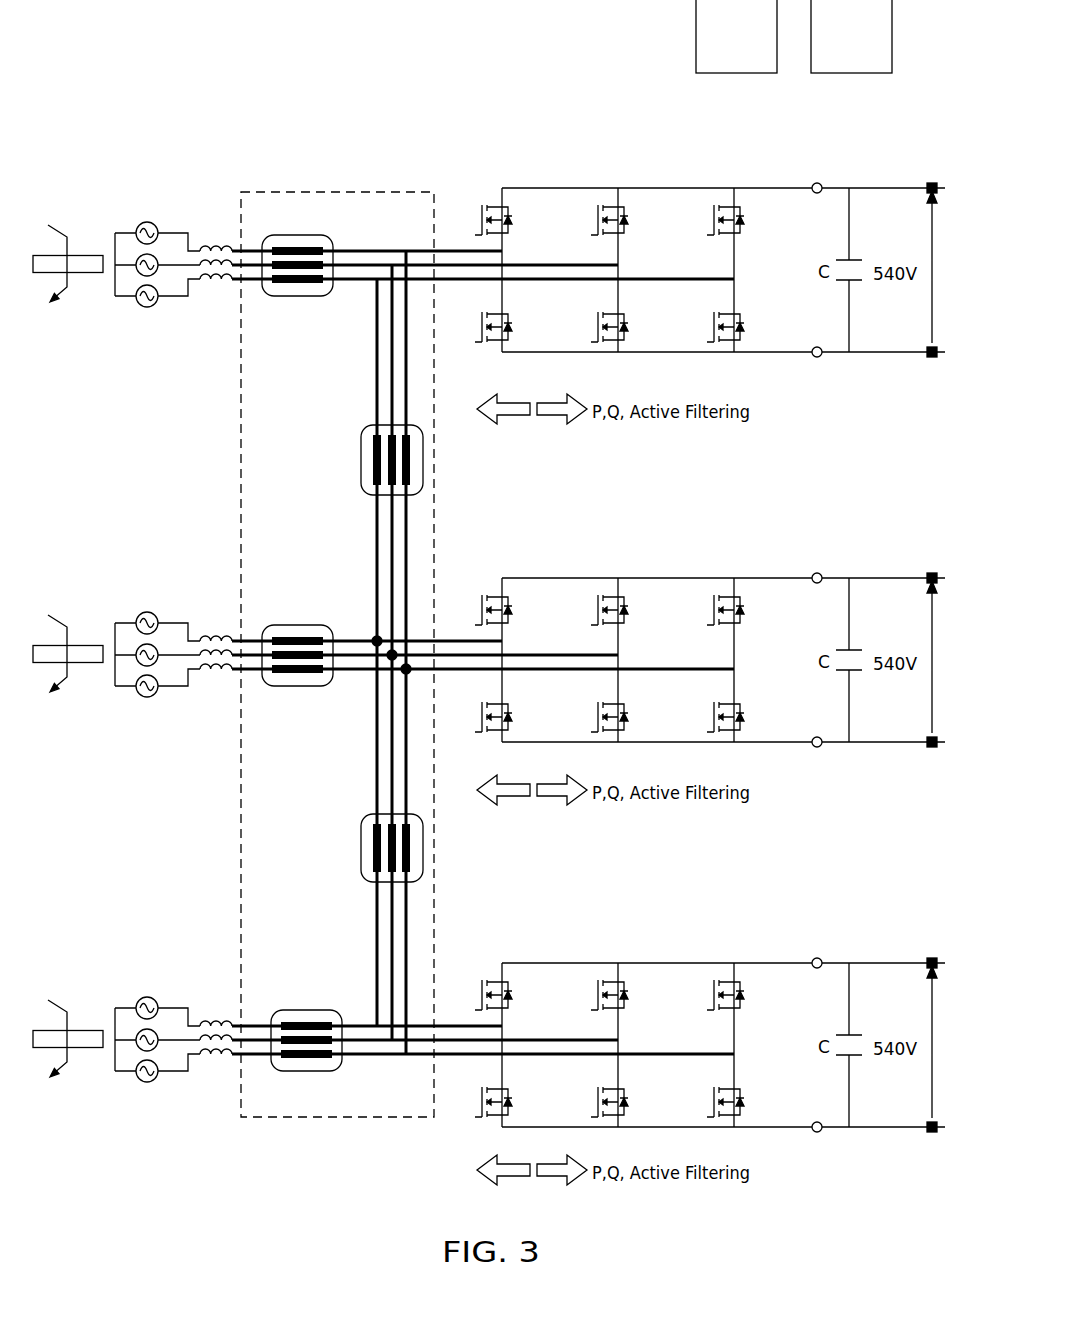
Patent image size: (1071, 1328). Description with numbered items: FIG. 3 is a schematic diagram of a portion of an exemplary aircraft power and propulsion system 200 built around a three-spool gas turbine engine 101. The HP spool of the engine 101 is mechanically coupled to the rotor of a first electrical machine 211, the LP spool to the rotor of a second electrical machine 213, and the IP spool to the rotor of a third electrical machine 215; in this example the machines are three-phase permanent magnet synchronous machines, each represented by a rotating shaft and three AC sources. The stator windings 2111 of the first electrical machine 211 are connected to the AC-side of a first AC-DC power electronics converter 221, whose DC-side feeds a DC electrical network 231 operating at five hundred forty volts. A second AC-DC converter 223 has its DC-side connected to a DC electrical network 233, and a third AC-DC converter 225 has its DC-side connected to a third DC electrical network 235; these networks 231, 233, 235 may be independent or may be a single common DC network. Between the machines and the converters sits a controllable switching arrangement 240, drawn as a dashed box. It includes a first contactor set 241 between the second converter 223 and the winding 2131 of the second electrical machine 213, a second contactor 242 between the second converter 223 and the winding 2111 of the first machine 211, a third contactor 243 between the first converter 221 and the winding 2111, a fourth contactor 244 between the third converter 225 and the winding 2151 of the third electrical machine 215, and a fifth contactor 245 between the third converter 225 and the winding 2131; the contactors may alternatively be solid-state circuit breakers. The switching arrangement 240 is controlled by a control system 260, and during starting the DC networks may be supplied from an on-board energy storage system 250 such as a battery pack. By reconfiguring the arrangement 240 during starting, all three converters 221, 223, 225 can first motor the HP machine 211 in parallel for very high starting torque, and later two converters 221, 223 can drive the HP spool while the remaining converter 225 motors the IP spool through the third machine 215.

The gas turbine engine 101 is at (102, 78).
The aircraft power and propulsion system 200 is at (348, 78).
The first electrical machine 211 is at (127, 198).
The second electrical machine 213 is at (127, 593).
The third electrical machine 215 is at (127, 980).
The stator windings of the first electrical machine 2111 is at (182, 298).
The winding of the second electrical machine 2131 is at (182, 688).
The winding of the third electrical machine 2151 is at (182, 1071).
The first AC-DC power electronics converter 221 is at (543, 188).
The second AC-DC power electronics converter 223 is at (543, 578).
The third AC-DC power converter 225 is at (543, 963).
The DC electrical network 231 is at (930, 358).
The DC electrical network 233 is at (930, 748).
The third DC electrical network 235 is at (930, 1134).
The controllable switching arrangement 240 is at (330, 1118).
The first contactor set 241 is at (297, 622).
The second contactor 242 is at (361, 468).
The third contactor 243 is at (298, 235).
The fourth contactor 244 is at (300, 1008).
The fifth contactor 245 is at (361, 858).
The on-board energy storage system 250 is at (762, 46).
The control system 260 is at (877, 46).